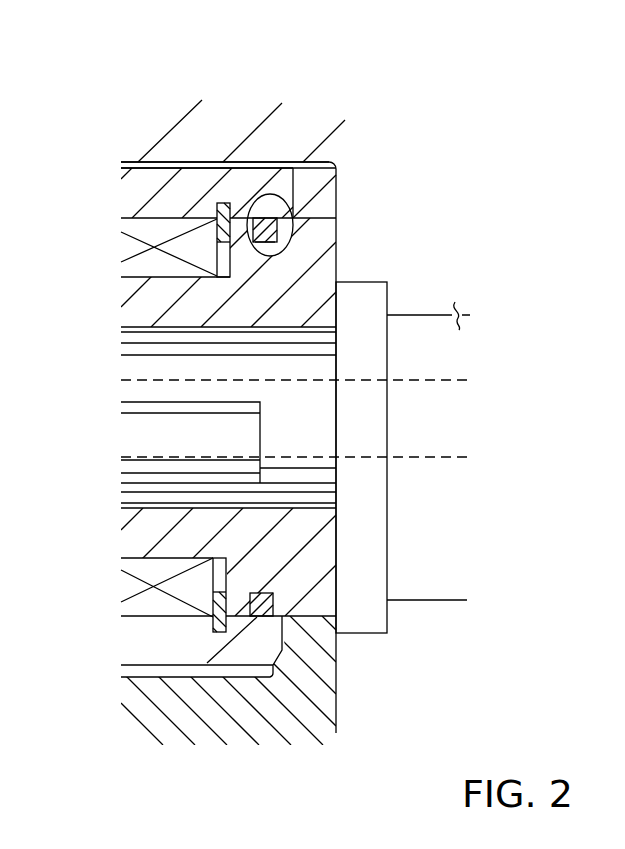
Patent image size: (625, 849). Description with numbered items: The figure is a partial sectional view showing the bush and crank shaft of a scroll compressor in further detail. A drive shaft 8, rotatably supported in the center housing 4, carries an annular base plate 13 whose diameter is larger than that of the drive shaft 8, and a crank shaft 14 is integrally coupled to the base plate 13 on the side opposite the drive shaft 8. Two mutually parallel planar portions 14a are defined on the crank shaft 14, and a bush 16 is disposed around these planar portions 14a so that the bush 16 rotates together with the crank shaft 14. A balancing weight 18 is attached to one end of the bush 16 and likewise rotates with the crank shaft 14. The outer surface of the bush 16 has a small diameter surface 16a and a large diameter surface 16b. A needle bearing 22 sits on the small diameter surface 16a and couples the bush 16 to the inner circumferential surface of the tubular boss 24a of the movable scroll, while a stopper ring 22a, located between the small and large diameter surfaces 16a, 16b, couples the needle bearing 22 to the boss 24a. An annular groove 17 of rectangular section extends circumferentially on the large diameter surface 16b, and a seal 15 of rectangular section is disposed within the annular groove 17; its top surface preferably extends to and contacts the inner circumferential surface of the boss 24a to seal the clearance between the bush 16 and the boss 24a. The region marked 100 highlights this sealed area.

The center housing 4 is at (167, 143).
The drive shaft 8 is at (295, 435).
The base plate 13 is at (353, 625).
The crank shaft 14 is at (133, 357).
The planar portion 14a is at (135, 428).
The seal 15 is at (279, 232).
The bush 16 is at (318, 282).
The small diameter surface 16a is at (135, 255).
The large diameter surface 16b is at (305, 220).
The annular groove 17 is at (272, 242).
The balancing weight 18 is at (322, 697).
The needle bearing 22 is at (143, 228).
The stopper ring 22a is at (224, 203).
The tubular boss 24a is at (182, 168).
The gap region 100 is at (273, 193).